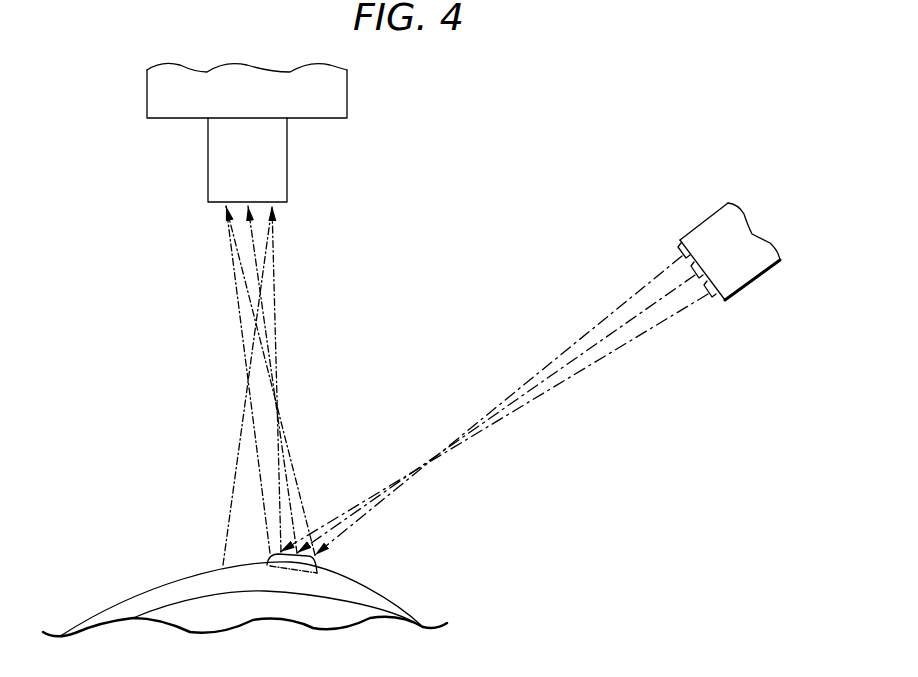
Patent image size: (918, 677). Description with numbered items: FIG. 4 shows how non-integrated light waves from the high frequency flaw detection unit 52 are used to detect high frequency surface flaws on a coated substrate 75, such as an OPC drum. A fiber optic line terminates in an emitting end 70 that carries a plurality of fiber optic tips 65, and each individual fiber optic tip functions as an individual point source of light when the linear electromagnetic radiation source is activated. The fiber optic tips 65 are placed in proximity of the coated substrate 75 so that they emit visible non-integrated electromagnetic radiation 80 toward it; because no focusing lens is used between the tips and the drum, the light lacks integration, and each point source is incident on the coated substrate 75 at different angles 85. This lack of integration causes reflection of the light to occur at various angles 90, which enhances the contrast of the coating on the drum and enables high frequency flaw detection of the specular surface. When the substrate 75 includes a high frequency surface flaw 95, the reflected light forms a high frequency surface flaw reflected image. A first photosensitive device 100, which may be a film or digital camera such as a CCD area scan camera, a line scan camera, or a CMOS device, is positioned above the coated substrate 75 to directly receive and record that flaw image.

The high frequency flaw detection unit 52 is at (522, 128).
The fiber optic tips 65 is at (680, 253).
The emitting end 70 is at (718, 220).
The coated substrate 75 is at (107, 612).
The visible non-integrated electromagnetic radiation 80 is at (615, 380).
The different angles 85 is at (368, 530).
The various angles 90 is at (308, 467).
The high frequency surface flaw 95 is at (268, 556).
The first photosensitive device 100 is at (178, 118).